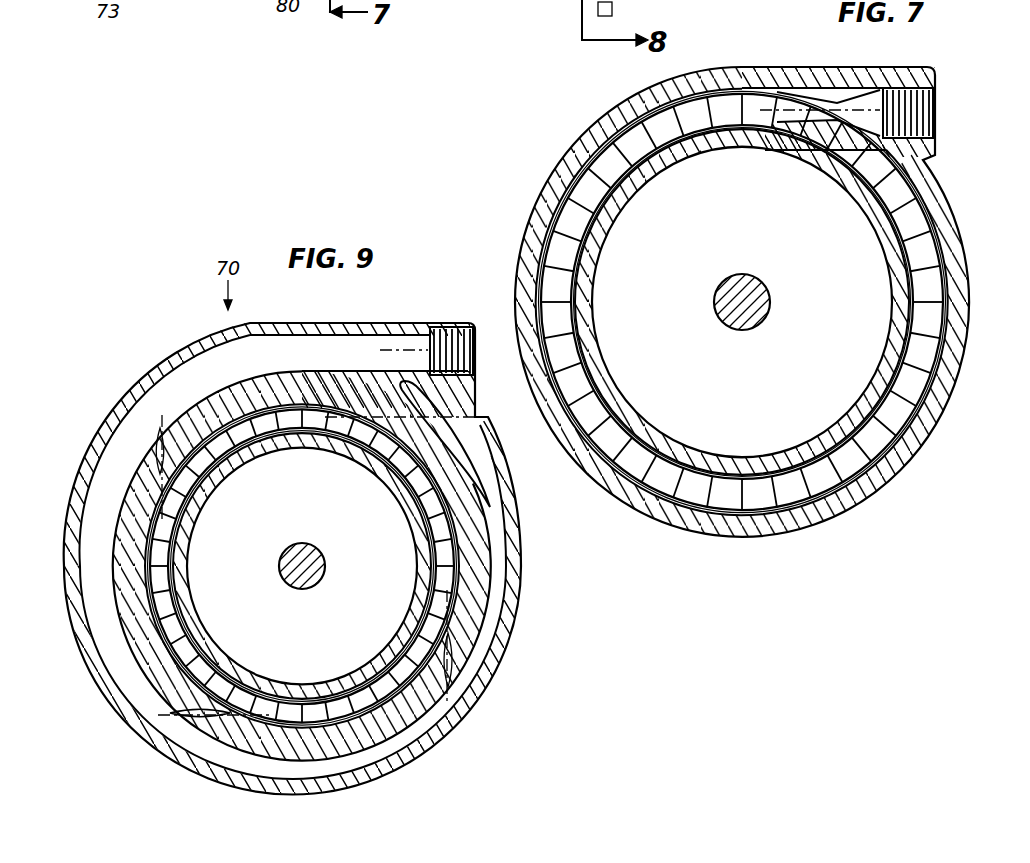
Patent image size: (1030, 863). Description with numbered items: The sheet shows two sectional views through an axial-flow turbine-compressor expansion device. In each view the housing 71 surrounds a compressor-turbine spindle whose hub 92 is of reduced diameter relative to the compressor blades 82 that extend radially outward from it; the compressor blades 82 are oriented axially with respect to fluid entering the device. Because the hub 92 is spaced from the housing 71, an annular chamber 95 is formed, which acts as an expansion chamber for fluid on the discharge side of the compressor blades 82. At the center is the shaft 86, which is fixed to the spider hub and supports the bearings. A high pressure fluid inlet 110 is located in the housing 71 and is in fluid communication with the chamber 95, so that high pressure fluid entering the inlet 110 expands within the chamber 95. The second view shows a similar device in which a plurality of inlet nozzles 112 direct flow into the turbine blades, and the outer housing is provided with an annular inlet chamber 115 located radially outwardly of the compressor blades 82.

In FIG. 7, the housing 71 is at (710, 76).
In FIG. 9, the housing 71 is at (300, 323).
In FIG. 7, the compressor blades 82 is at (637, 137).
In FIG. 9, the compressor blades 82 is at (447, 555).
In FIG. 7, the shaft 86 is at (716, 300).
In FIG. 9, the shaft 86 is at (300, 545).
In FIG. 7, the hub 92 is at (650, 172).
In FIG. 9, the hub 92 is at (278, 455).
In FIG. 7, the chamber 95 is at (662, 93).
In FIG. 9, the chamber 95 is at (220, 410).
In FIG. 7, the high pressure fluid inlet 110 is at (930, 100).
In FIG. 9, the high pressure fluid inlet 110 is at (470, 330).
In FIG. 9, the inlet nozzles 112 is at (158, 447).
In FIG. 9, the annular inlet chamber 115 is at (322, 348).